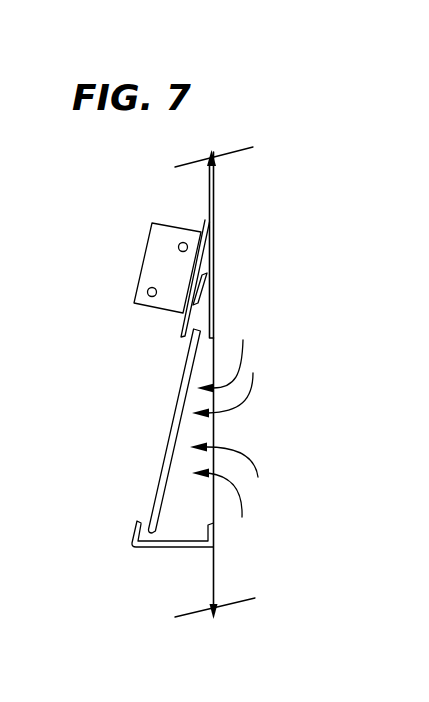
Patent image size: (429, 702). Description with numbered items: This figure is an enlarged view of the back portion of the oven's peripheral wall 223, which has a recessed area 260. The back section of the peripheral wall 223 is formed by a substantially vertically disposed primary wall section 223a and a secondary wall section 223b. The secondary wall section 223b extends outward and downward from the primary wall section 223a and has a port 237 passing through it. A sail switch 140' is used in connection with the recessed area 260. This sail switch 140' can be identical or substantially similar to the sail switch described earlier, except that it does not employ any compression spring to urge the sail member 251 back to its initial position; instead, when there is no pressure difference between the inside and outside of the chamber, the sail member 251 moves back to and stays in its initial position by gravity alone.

The peripheral wall 223 is at (214, 568).
The primary wall section 223a is at (214, 173).
The secondary wall section 223b is at (207, 222).
The port 237 is at (168, 428).
The sail member 251 is at (262, 351).
The recessed area 260 is at (272, 437).
The sail switch 140' is at (66, 408).